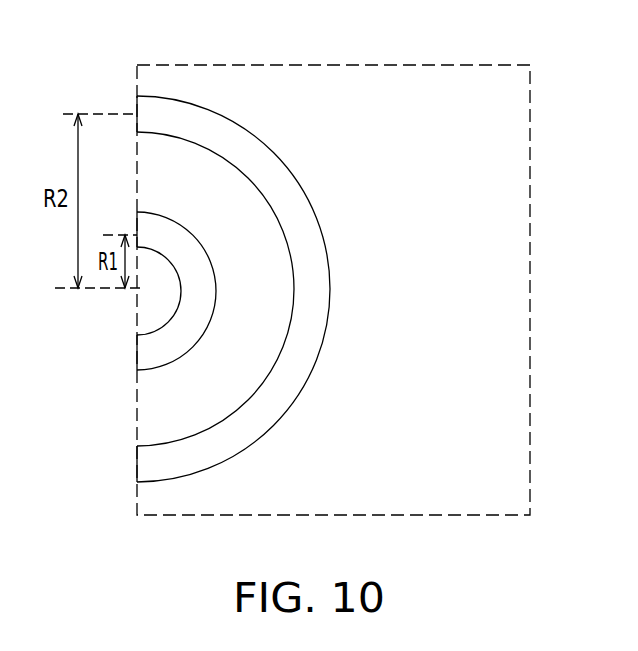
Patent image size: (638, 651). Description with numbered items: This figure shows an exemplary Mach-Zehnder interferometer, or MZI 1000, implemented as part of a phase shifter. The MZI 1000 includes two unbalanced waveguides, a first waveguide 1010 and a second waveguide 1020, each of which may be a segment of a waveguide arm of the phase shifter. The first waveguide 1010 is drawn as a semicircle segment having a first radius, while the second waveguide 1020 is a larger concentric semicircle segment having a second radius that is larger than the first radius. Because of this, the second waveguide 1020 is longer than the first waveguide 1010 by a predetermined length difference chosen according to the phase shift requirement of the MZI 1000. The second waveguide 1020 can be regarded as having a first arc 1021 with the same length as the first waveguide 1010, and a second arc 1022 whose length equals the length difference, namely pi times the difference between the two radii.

The Mach-Zehnder interferometer (MZI) 1000 is at (460, 65).
The first waveguide 1010 is at (148, 355).
The second waveguide 1020 is at (148, 470).
The first arc 1021 is at (270, 163).
The second arc 1022 is at (310, 320).